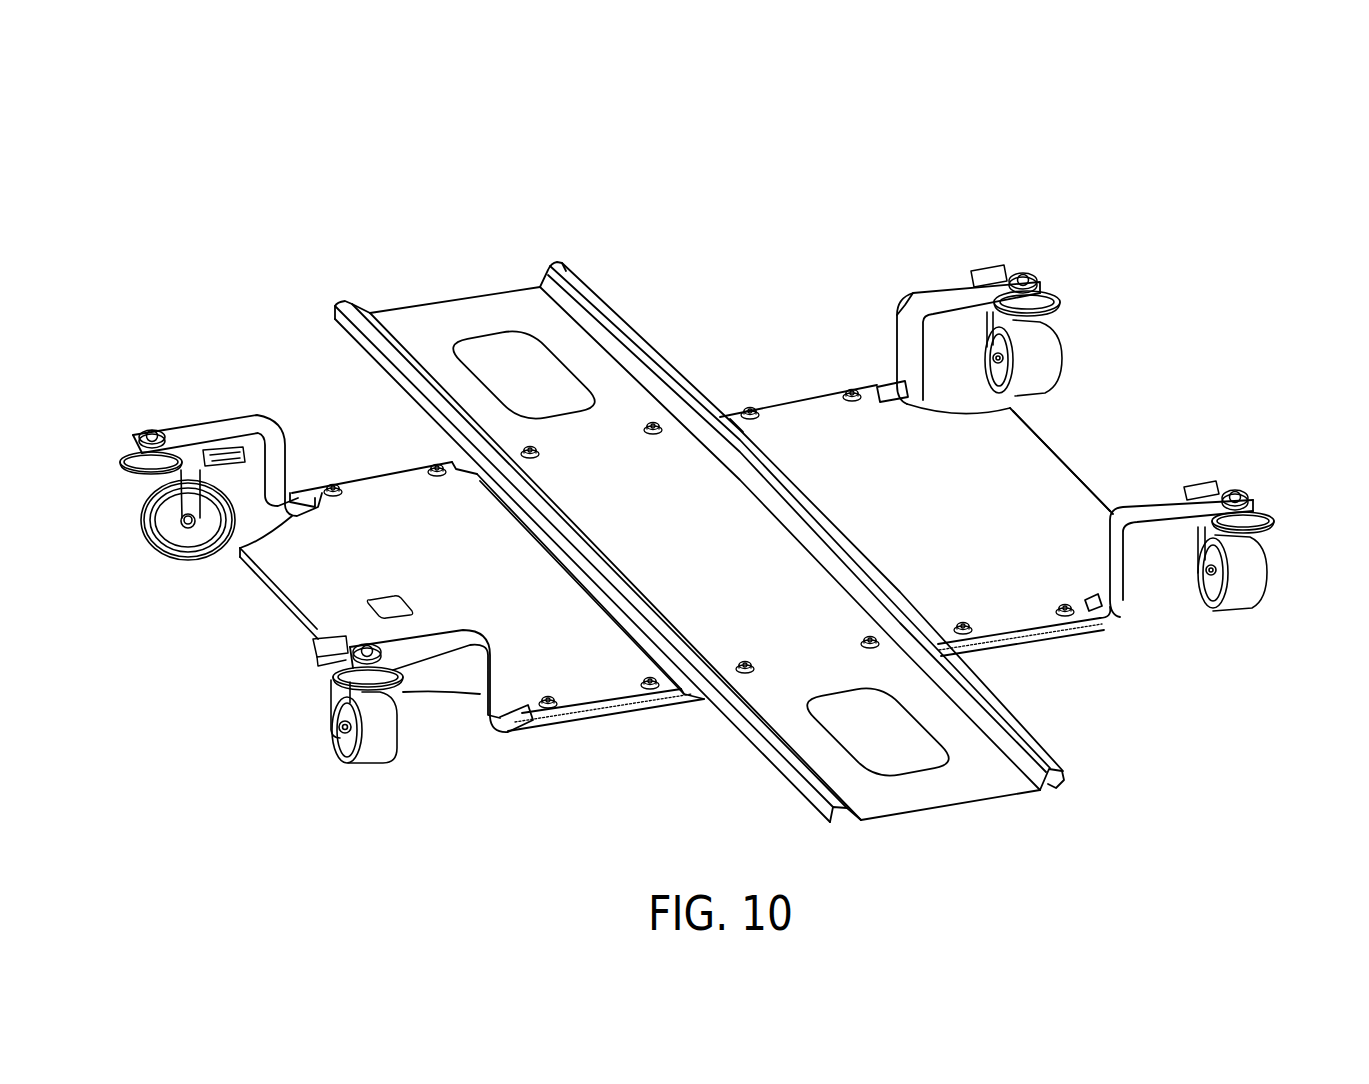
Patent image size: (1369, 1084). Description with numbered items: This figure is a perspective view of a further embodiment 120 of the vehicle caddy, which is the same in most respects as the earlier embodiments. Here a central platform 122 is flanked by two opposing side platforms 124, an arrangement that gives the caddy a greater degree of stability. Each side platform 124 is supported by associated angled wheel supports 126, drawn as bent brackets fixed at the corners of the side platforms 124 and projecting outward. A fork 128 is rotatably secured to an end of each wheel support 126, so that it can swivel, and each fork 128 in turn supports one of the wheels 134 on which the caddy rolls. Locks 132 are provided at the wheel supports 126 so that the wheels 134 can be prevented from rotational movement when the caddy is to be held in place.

The vehicle caddy embodiment 120 is at (1207, 281).
The central platform 122 is at (718, 550).
The side platform 124 is at (441, 560).
The angled wheel support 126 is at (217, 430).
The fork 128 is at (140, 510).
The lock 132 is at (328, 647).
The wheel 134 is at (157, 557).